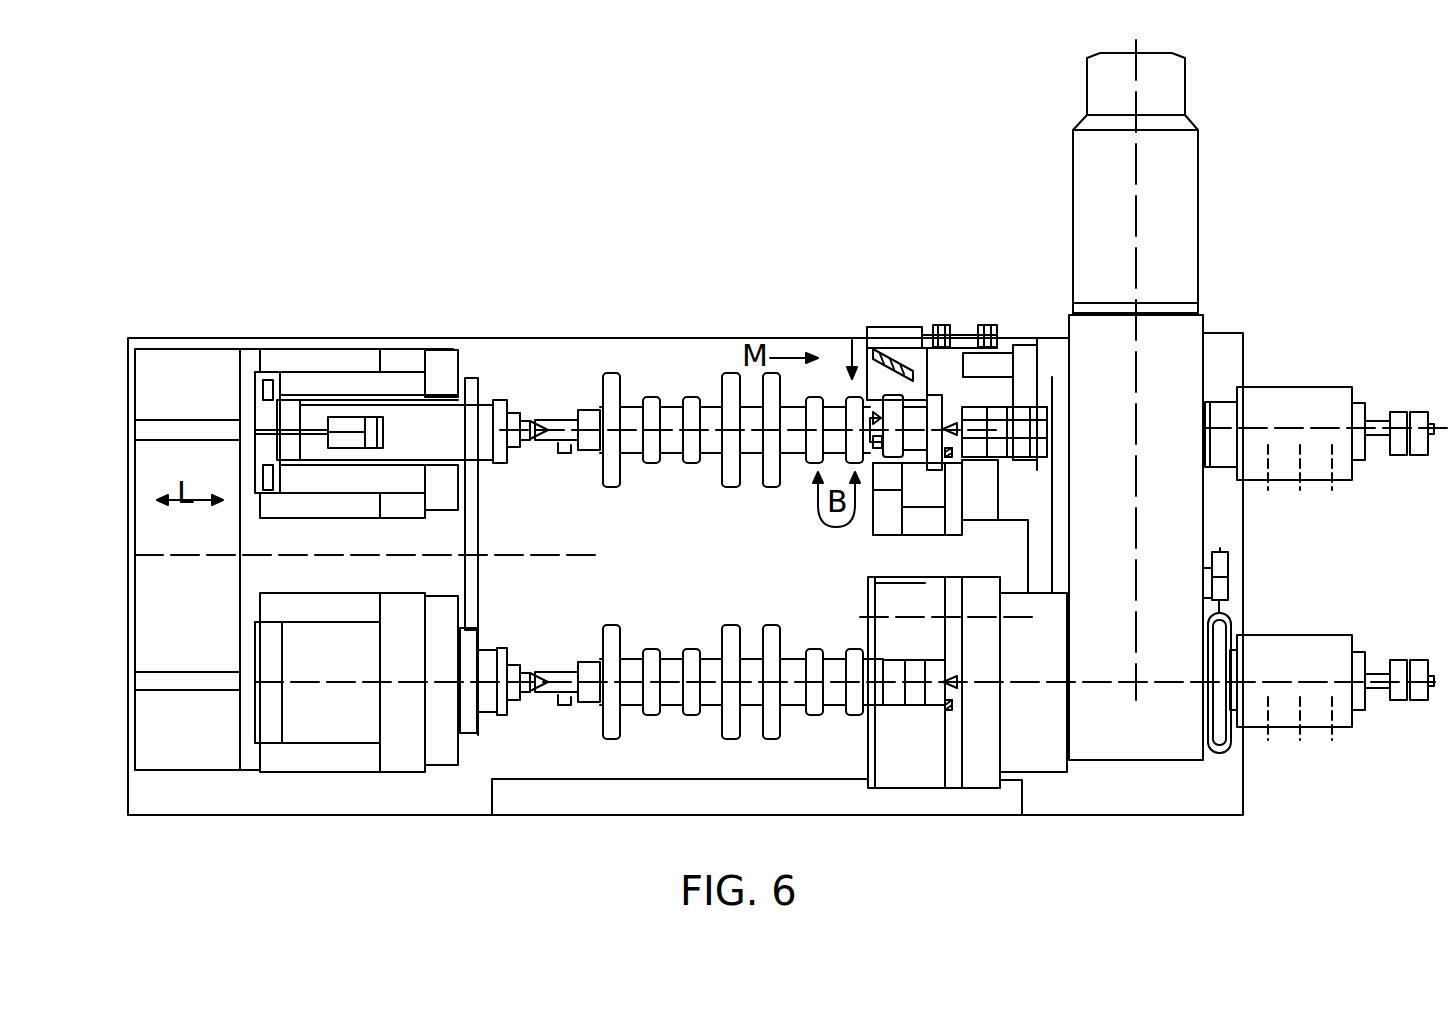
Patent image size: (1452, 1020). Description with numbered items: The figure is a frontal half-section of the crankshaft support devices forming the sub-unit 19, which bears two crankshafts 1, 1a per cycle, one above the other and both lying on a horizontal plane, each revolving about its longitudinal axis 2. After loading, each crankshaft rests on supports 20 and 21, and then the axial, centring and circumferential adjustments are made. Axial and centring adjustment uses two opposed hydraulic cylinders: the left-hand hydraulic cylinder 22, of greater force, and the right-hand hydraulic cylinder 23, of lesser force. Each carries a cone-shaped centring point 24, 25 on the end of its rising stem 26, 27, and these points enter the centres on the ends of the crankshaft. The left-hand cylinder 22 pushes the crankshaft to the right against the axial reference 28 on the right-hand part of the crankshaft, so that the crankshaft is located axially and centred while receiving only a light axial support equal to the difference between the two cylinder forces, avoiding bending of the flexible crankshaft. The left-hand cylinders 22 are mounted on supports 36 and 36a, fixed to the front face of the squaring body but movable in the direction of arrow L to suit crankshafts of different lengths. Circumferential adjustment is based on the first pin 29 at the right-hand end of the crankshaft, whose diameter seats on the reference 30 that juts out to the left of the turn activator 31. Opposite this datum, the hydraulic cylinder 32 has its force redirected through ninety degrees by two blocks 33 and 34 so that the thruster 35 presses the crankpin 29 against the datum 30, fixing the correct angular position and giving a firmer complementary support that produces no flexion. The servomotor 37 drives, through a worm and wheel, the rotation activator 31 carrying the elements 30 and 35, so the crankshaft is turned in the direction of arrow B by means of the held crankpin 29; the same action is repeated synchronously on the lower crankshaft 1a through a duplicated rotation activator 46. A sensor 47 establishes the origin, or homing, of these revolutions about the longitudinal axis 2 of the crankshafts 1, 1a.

The sub-unit 19 is at (393, 188).
The left-hand hydraulic cylinder 22 is at (340, 420).
The support 36 is at (405, 362).
The support 36a is at (403, 737).
The longitudinal axis 2 is at (535, 420).
The cone-shaped centring point 24 is at (540, 437).
The rising stem 26 is at (482, 440).
The support 20 is at (565, 447).
The crankshaft 1 is at (612, 390).
The crankshaft 1a is at (612, 640).
The thruster 35 is at (872, 418).
The block 34 is at (870, 358).
The block 33 is at (903, 358).
The hydraulic cylinder 32 is at (953, 355).
The right-hand hydraulic cylinder 23 is at (1028, 420).
The axial reference 28 is at (962, 452).
The cone-shaped centring point 25 is at (989, 451).
The rising stem 27 is at (1031, 451).
The support 21 is at (920, 465).
The turn activator 31 is at (981, 522).
The first pin 29 is at (880, 425).
The reference 30 is at (878, 438).
The servomotor 37 is at (1162, 195).
The sensor 47 is at (1222, 608).
The rotation activator 46 is at (984, 758).